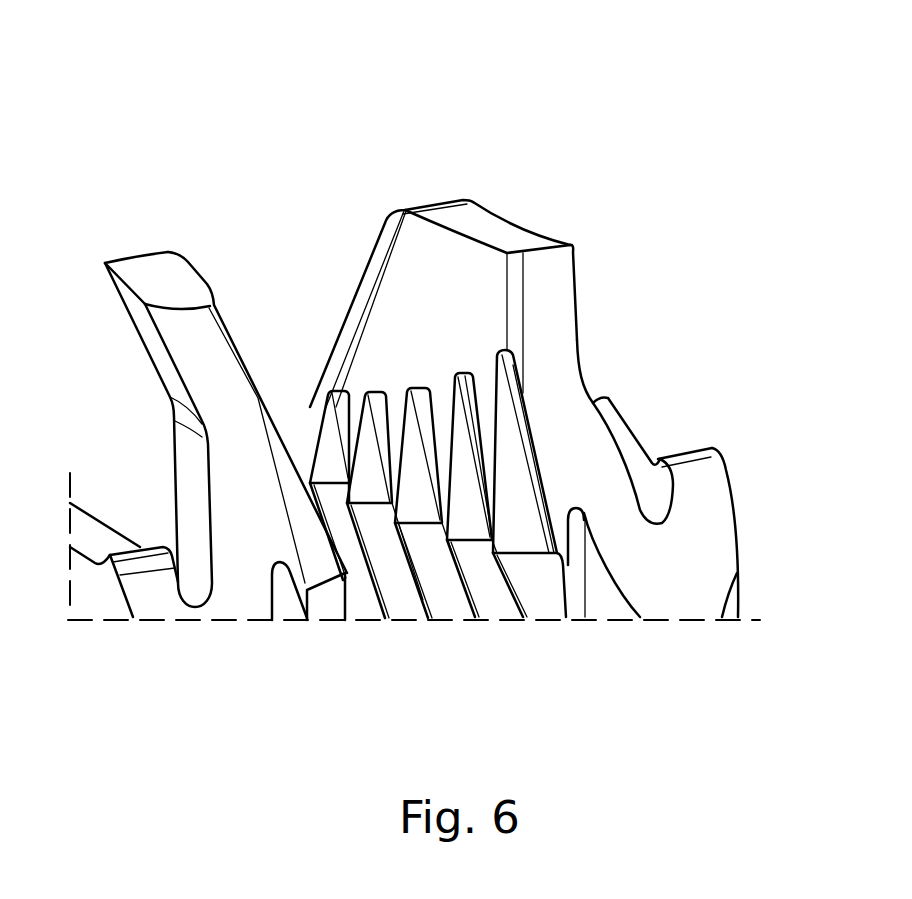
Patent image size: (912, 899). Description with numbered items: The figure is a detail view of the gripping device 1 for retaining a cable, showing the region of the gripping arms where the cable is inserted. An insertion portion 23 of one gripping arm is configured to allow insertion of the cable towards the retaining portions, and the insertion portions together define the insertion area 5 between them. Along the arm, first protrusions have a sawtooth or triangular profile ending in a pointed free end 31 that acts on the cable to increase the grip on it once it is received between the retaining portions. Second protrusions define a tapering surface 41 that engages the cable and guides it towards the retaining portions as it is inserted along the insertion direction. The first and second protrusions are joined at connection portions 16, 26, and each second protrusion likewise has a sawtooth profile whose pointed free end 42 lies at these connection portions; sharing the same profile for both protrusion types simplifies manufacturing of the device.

The gripping device 1 is at (203, 92).
The insertion area 5 is at (257, 300).
The connection portion 16 is at (304, 583).
The insertion portion 23 is at (394, 433).
The connection portion 26 is at (477, 562).
The pointed free end 31 is at (446, 540).
The tapering surface 41 is at (459, 290).
The pointed free end 42 is at (548, 540).